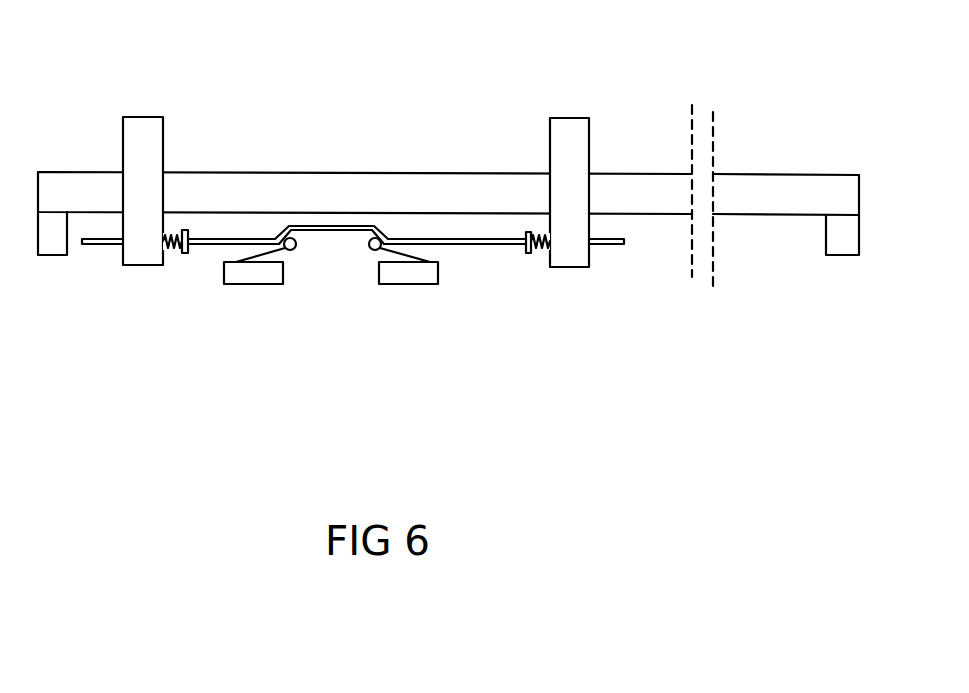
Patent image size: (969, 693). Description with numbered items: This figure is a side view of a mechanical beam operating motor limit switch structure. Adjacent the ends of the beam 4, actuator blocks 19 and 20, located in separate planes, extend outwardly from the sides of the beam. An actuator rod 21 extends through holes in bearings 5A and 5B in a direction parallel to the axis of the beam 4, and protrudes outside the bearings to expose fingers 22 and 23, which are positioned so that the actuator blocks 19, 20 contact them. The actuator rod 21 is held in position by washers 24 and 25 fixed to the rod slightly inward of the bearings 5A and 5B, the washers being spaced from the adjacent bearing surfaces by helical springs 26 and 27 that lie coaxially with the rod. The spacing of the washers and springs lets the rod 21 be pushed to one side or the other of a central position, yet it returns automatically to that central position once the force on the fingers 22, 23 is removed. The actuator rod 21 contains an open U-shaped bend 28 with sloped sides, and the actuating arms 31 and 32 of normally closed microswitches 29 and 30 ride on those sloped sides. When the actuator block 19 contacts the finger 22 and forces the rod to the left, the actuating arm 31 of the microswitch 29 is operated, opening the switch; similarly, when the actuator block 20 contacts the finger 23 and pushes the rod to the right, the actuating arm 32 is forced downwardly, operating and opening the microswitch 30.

The beam 4 is at (448, 169).
The bearing 5A is at (585, 142).
The bearing 5B is at (160, 146).
The actuator block 19 is at (810, 285).
The actuator block 20 is at (69, 298).
The actuator rod 21 is at (456, 294).
The finger 22 is at (639, 318).
The finger 23 is at (180, 294).
The washer 24 is at (561, 314).
The washer 25 is at (218, 289).
The helical spring 26 is at (568, 291).
The helical spring 27 is at (200, 315).
The open U-shaped bend 28 is at (331, 288).
The microswitch 29 is at (428, 322).
The microswitch 30 is at (282, 322).
The actuating arm 31 is at (420, 149).
The actuating arm 32 is at (257, 149).